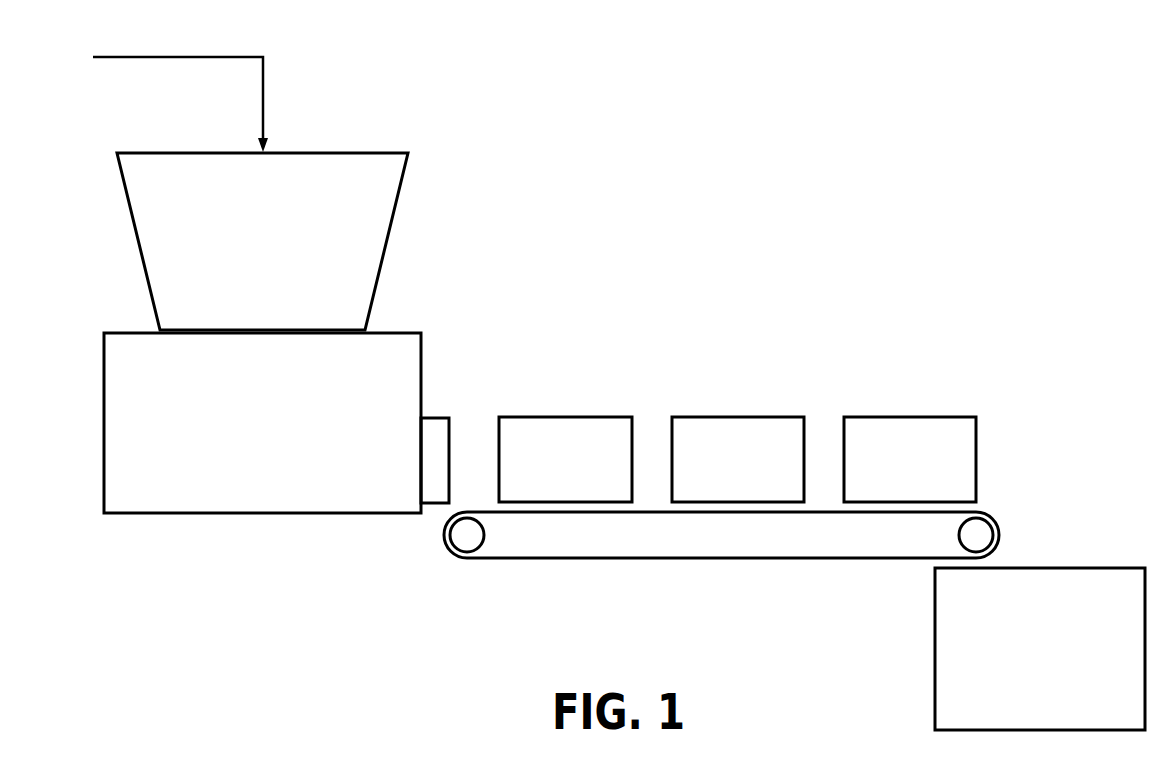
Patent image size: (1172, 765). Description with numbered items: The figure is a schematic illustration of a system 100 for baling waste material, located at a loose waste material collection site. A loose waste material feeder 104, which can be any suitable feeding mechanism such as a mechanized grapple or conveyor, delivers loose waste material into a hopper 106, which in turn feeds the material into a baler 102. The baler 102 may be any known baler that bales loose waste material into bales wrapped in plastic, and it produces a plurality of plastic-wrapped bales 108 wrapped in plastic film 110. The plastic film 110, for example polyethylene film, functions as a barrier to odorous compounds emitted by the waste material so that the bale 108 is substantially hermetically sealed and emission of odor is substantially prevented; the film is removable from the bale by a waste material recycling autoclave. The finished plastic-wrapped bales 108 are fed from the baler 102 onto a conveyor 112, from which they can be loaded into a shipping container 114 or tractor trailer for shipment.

The system for baling waste material 100 is at (628, 196).
The baler 102 is at (293, 437).
The loose waste material feeder 104 is at (171, 57).
The hopper 106 is at (293, 254).
The plastic-wrapped bale 108 is at (543, 423).
The plastic film 110 is at (593, 450).
The conveyor 112 is at (582, 558).
The shipping container 114 is at (1065, 660).